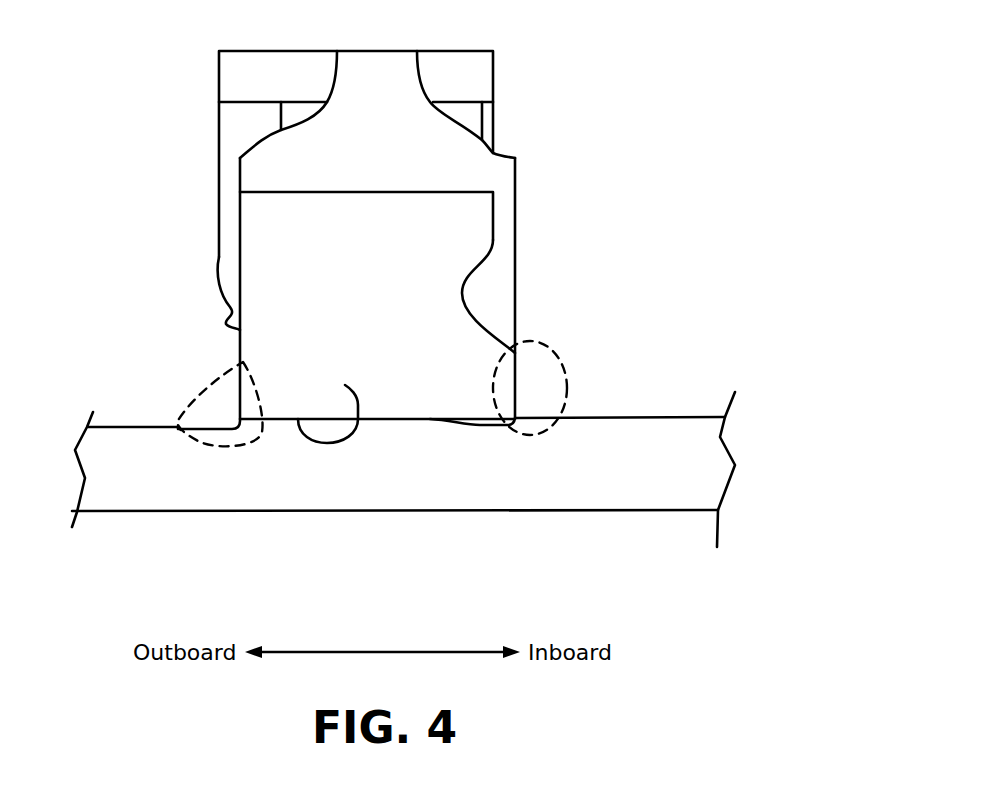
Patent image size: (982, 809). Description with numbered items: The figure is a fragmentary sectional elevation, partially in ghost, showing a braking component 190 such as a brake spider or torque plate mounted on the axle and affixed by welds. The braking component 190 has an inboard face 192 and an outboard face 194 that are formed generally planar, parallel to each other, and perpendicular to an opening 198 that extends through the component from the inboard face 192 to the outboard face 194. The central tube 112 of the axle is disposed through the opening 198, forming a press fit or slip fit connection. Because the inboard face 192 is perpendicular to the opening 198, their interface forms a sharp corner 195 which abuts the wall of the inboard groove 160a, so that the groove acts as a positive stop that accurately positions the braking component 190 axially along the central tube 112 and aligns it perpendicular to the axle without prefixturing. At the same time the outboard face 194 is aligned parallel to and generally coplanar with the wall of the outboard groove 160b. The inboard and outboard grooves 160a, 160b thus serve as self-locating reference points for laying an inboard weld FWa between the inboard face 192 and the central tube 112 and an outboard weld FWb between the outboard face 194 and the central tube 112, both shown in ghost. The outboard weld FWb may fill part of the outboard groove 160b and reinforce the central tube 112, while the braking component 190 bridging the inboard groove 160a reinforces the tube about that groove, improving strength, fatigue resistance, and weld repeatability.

The braking component 190 is at (215, 114).
The inboard face 192 is at (515, 224).
The outboard face 194 is at (240, 348).
The sharp corner 195 is at (515, 417).
The opening 198 is at (345, 385).
The central tube 112 is at (688, 392).
The inboard groove 160a is at (492, 438).
The outboard groove 160b is at (205, 450).
The inboard weld FWa is at (538, 340).
The outboard weld FWb is at (193, 393).